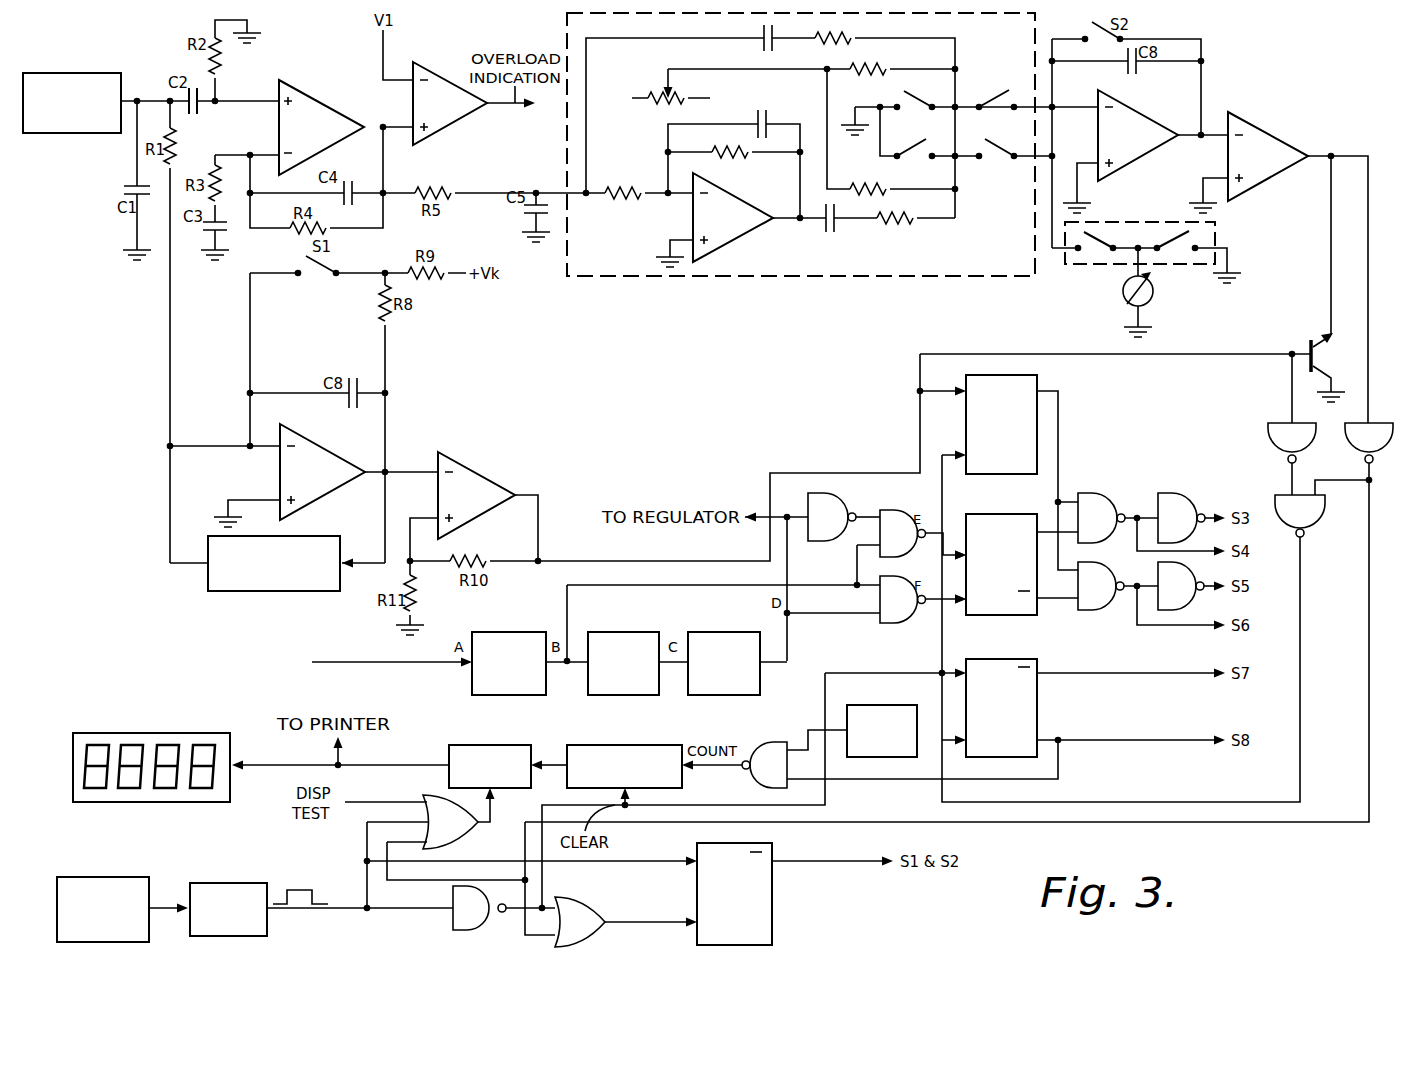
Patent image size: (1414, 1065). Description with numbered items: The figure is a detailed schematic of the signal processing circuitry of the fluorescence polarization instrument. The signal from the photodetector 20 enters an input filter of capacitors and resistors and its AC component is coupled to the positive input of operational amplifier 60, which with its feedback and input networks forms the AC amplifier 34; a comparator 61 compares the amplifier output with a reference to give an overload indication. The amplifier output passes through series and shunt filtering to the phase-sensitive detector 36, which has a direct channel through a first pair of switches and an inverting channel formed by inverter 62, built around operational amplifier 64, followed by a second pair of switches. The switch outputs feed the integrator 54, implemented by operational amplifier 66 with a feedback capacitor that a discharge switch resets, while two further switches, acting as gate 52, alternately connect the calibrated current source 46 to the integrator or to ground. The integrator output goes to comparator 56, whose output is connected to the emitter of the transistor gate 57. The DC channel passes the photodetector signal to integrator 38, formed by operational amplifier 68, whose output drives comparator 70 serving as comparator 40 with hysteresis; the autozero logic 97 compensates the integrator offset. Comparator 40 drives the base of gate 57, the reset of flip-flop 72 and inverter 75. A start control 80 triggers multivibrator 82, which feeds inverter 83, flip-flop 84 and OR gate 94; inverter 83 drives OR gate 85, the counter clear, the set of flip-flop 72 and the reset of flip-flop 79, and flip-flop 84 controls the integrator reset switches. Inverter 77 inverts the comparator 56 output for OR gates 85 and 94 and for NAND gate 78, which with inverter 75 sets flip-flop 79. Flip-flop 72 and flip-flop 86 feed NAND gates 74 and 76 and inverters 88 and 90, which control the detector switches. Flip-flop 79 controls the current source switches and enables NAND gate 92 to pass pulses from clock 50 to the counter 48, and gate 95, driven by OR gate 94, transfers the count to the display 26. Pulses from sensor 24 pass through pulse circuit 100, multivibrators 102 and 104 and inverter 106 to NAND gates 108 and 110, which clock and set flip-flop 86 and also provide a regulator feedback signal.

The photodetector 20 is at (104, 75).
The sensor 24 is at (307, 681).
The display 26 is at (122, 733).
The AC amplifier 34 is at (276, 135).
The phase-sensitive detector 36 is at (998, 266).
The integrator 38 is at (277, 471).
The comparator 40 is at (437, 489).
The calibrated current source 46 is at (1124, 298).
The counter 48 is at (645, 745).
The clock 50 is at (863, 706).
The gate 52 is at (1130, 222).
The integrator 54 is at (1148, 157).
The comparator 56 is at (1274, 174).
The gate 57 is at (1310, 340).
The operational amplifier 60 is at (283, 115).
The comparator 61 is at (457, 78).
The inverter 62 is at (692, 215).
The operational amplifier 64 is at (747, 229).
The operational amplifier 66 is at (1098, 130).
The operational amplifier 68 is at (316, 493).
The comparator 70 is at (437, 457).
The flip-flop 72 is at (978, 428).
The NAND gate 74 is at (1084, 493).
The inverter 75 is at (1267, 429).
The NAND gate 76 is at (1092, 612).
The inverter 77 is at (1374, 423).
The NAND gate 78 is at (1282, 495).
The flip-flop 79 is at (995, 659).
The start control 80 is at (92, 887).
The multivibrator circuit 82 is at (196, 886).
The inverter 83 is at (451, 919).
The flip-flop 84 is at (766, 888).
The OR gate 85 is at (588, 912).
The flip-flop 86 is at (1025, 514).
The inverter 88 is at (1164, 493).
The inverter 90 is at (1185, 599).
The NAND gate 92 is at (769, 749).
The OR gate 94 is at (441, 796).
The gate 95 is at (486, 743).
The autozero logic 97 is at (206, 573).
The pulse circuit 100 is at (484, 632).
The multivibrator circuit 102 is at (601, 632).
The multivibrator circuit 104 is at (704, 632).
The inverter 106 is at (816, 496).
The NAND gate 108 is at (884, 510).
The NAND gate 110 is at (896, 583).